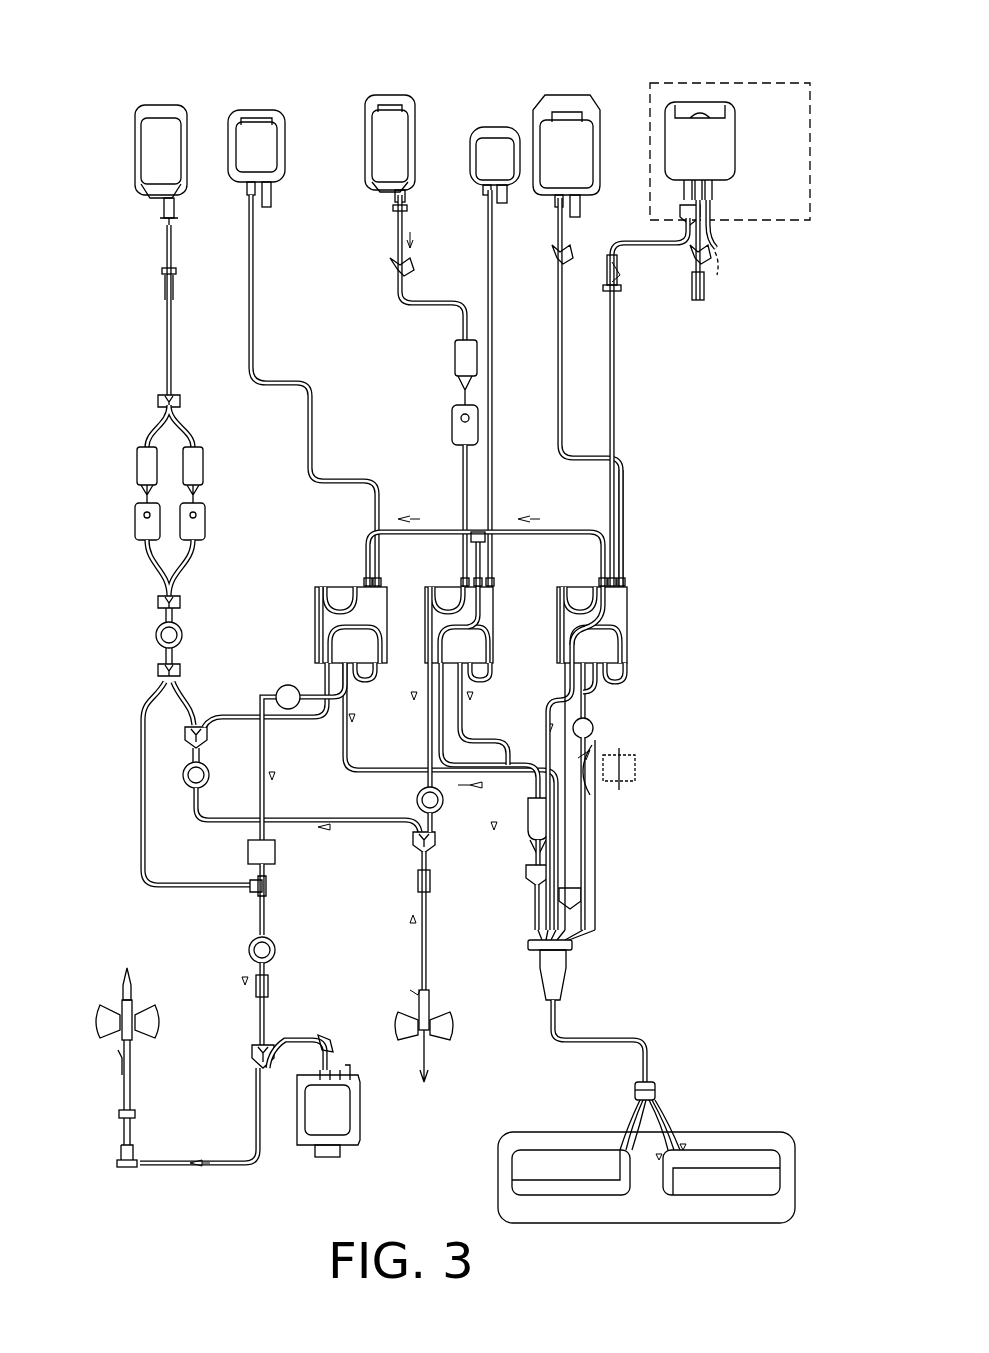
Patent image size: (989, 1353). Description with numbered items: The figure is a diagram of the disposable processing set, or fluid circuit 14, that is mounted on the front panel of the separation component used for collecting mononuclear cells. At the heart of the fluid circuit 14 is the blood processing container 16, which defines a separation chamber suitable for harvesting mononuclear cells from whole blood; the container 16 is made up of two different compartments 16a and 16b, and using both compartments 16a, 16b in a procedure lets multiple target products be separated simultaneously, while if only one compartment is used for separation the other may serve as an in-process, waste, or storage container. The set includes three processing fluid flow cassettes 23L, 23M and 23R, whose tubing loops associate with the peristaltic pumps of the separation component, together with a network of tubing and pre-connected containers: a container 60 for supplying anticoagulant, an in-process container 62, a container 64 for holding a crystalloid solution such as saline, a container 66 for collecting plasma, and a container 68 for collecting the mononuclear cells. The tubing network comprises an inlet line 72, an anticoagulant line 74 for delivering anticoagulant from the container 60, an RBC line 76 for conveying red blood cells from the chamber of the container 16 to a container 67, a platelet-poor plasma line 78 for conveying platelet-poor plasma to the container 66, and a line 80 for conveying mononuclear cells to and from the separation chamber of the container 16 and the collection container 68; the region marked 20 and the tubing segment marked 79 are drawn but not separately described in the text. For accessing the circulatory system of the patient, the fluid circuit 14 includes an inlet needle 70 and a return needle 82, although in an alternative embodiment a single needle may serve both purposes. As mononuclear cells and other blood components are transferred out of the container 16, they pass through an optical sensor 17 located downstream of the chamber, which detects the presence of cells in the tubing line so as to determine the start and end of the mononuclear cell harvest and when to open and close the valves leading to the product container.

The fluid circuit 14 is at (855, 33).
The blood processing container 16 is at (790, 1175).
The first compartment 16a is at (705, 1158).
The second compartment 16b is at (598, 1172).
The optical sensor 17 is at (604, 725).
The blood source container area 20 is at (800, 178).
The processing fluid flow cassette 23L is at (315, 612).
The processing fluid flow cassette 23M is at (493, 598).
The processing fluid flow cassette 23R is at (627, 612).
The anticoagulant container 60 is at (416, 92).
The in-process container 62 is at (283, 122).
The crystalloid solution container 64 is at (188, 117).
The plasma collection container 66 is at (588, 107).
The red blood cell container 67 is at (503, 122).
The mononuclear cell collection container 68 is at (730, 158).
The inlet needle 70 is at (432, 1060).
The inlet line 72 is at (430, 920).
The anticoagulant line 74 is at (425, 310).
The RBC line 76 is at (495, 480).
The platelet-poor plasma line 78 is at (566, 350).
The tubing to right cassette 79 is at (628, 505).
The mononuclear cell line 80 is at (618, 392).
The return needle 82 is at (122, 995).